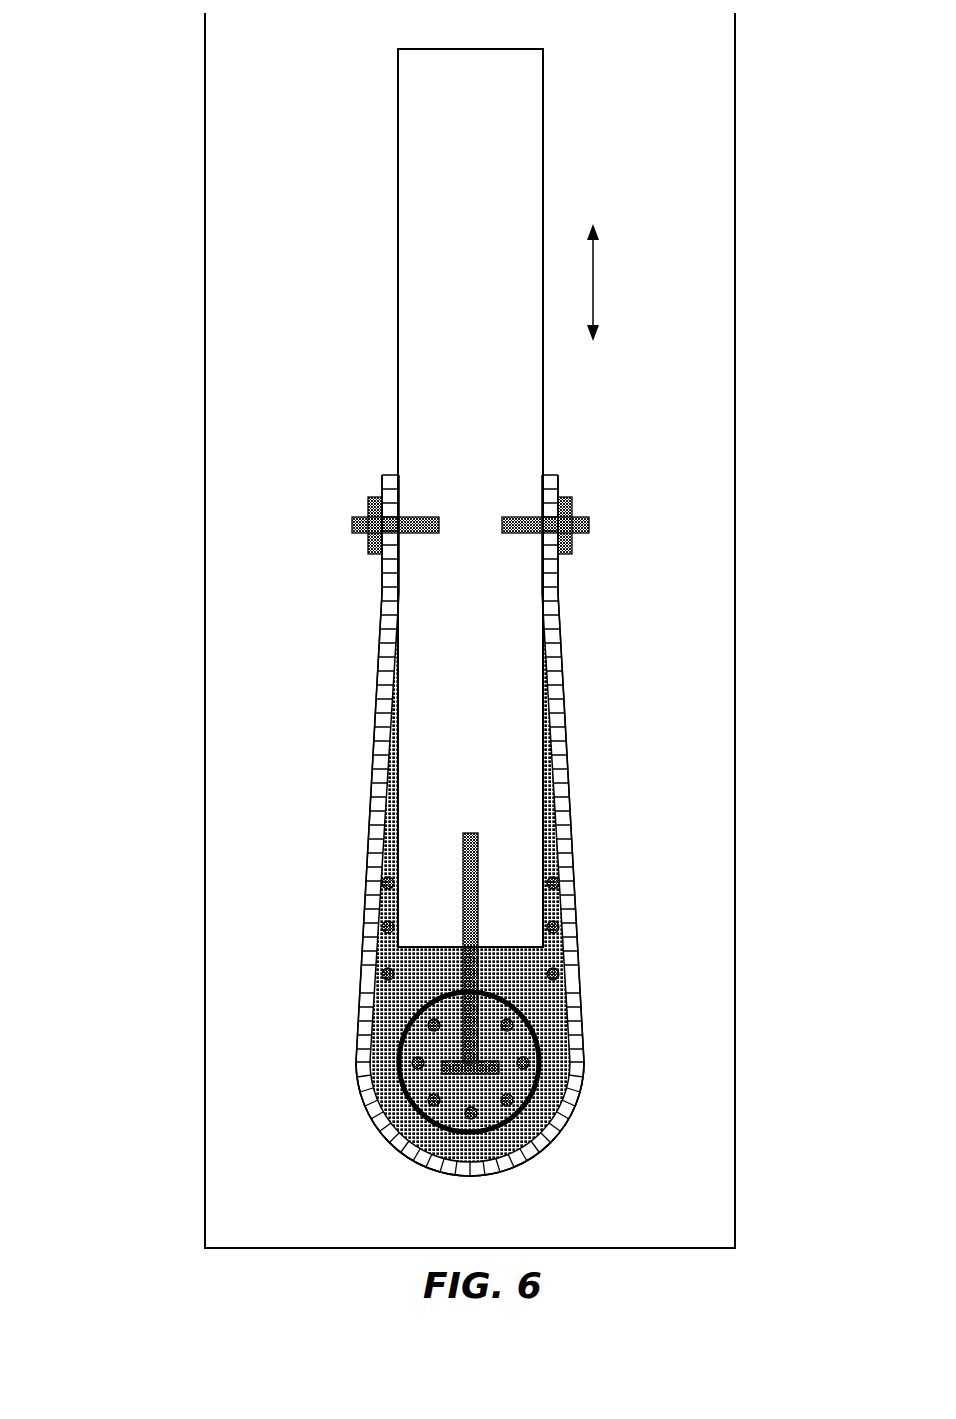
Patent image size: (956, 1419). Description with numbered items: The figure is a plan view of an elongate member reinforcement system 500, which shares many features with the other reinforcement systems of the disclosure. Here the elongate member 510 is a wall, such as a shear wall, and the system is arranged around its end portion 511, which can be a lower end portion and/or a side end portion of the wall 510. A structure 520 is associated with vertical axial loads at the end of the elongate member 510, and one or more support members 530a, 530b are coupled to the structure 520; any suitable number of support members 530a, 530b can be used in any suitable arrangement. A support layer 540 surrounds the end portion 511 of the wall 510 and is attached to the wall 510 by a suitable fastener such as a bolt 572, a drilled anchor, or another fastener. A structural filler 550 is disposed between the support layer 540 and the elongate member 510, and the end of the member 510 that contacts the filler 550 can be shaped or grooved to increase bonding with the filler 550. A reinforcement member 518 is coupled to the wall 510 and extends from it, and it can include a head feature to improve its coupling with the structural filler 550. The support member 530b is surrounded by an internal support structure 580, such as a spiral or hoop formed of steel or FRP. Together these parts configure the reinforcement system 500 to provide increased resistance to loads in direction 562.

The elongate member reinforcement system 500 is at (190, 106).
The elongate member 510 is at (398, 194).
The end portion 511 is at (345, 745).
The reinforcement member 518 is at (478, 1052).
The structure 520 is at (340, 637).
The support member 530a is at (365, 975).
The support member 530b is at (434, 1100).
The support layer 540 is at (357, 1054).
The structural filler 550 is at (538, 984).
The direction 562 is at (596, 290).
The bolt 572 is at (376, 497).
The internal support structure 580 is at (525, 1103).